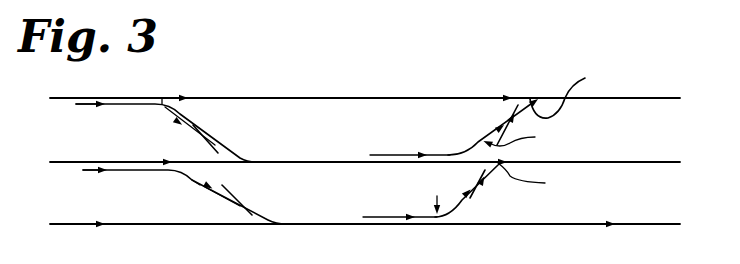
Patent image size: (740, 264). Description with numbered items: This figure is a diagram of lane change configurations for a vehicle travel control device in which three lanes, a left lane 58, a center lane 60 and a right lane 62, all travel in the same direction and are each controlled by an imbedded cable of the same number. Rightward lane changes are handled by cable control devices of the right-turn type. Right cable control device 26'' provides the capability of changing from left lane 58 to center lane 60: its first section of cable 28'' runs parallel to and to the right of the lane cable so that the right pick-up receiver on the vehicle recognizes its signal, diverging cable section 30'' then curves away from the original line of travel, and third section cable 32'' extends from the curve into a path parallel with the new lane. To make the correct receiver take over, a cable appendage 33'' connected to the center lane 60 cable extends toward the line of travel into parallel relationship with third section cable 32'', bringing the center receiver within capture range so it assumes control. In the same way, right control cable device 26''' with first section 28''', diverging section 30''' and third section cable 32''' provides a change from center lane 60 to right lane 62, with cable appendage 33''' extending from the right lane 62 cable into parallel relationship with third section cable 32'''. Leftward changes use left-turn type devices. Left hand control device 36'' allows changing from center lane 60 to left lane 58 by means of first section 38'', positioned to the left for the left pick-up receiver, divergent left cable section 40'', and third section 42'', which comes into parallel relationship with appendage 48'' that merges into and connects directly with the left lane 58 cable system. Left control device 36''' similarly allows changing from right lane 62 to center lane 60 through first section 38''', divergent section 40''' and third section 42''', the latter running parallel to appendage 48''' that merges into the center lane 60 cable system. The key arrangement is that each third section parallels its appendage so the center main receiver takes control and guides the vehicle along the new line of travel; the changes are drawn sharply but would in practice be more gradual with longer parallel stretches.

The right cable control device 26'' is at (166, 131).
The first section of cable 28'' is at (70, 122).
The diverging cable section 30'' is at (192, 86).
The third section cable 32'' is at (181, 128).
The cable appendage 33'' is at (238, 139).
The right control cable device 26''' is at (184, 195).
The first section of cable 28''' is at (82, 193).
The diverging cable section 30''' is at (187, 198).
The third section cable 32''' is at (216, 220).
The cable appendage 33''' is at (270, 197).
The left hand control device 36'' is at (527, 134).
The first section of cable 38'' is at (410, 138).
The divergent left cable section 40'' is at (494, 125).
The third section 42'' is at (500, 101).
The cable appendage 48'' is at (575, 92).
The left control device 36''' is at (437, 195).
The first section of cable 38''' is at (400, 197).
The divergent left cable section 40''' is at (478, 194).
The third section 42''' is at (536, 169).
The cable appendage 48''' is at (540, 178).
The left lane 58 is at (355, 98).
The center lane 60 is at (360, 162).
The right lane 62 is at (378, 224).